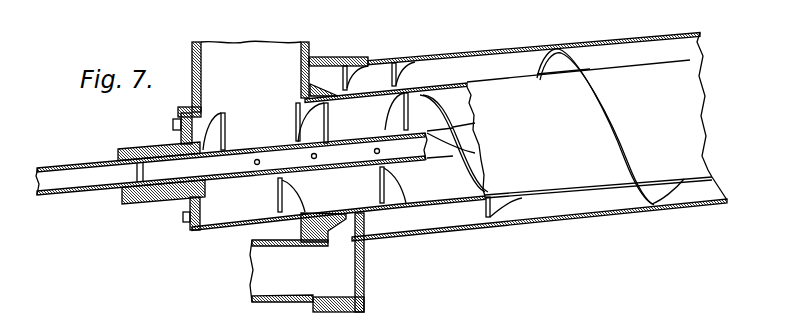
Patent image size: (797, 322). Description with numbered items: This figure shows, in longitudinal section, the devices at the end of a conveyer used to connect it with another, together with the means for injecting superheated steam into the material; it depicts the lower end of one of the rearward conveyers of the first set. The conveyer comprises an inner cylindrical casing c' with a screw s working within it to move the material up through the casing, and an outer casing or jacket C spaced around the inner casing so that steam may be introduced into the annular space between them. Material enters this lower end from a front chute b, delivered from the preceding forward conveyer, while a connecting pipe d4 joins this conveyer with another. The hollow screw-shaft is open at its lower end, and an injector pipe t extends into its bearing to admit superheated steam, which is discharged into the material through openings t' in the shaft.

The injector pipe t is at (255, 163).
The front chute b is at (255, 92).
The outer casing or jacket C is at (437, 57).
The inner cylindrical casing c' is at (447, 123).
The screw s is at (381, 137).
The openings in the shaft t' is at (328, 152).
The connecting pipe d4 is at (307, 262).